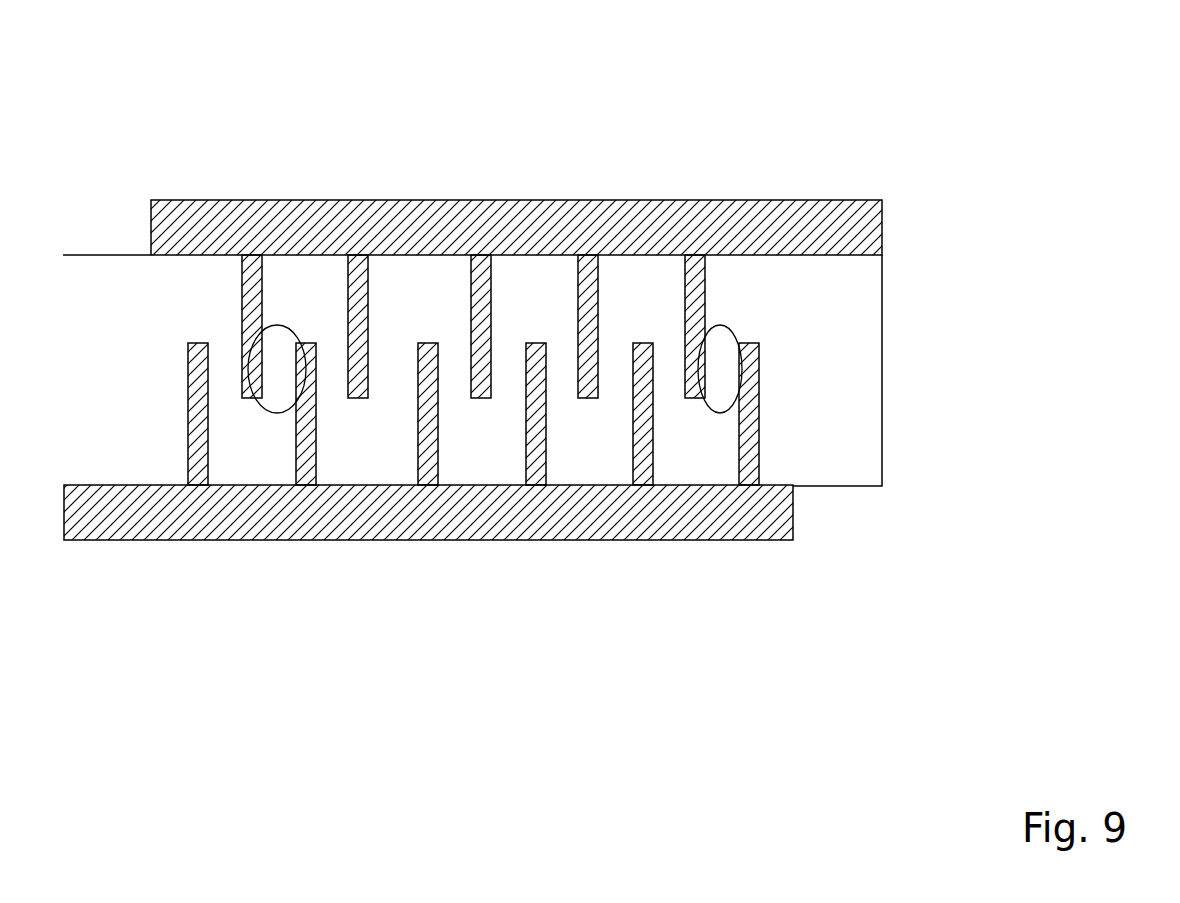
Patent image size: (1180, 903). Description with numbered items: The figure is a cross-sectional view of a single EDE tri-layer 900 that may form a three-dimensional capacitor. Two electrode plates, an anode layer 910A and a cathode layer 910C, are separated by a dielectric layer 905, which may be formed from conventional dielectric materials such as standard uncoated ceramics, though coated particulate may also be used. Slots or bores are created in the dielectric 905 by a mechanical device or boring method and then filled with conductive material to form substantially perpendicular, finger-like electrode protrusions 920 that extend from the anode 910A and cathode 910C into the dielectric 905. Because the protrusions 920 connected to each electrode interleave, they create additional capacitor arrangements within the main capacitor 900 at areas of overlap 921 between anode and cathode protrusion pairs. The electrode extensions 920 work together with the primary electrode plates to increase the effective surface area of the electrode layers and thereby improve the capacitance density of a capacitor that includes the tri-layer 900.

The EDE tri-layer 900 is at (1030, 30).
The dielectric layer 905 is at (847, 407).
The anode layer 910A is at (866, 234).
The cathode layer 910C is at (793, 515).
The electrode protrusions 920 is at (483, 357).
The areas of overlap 921 is at (277, 413).